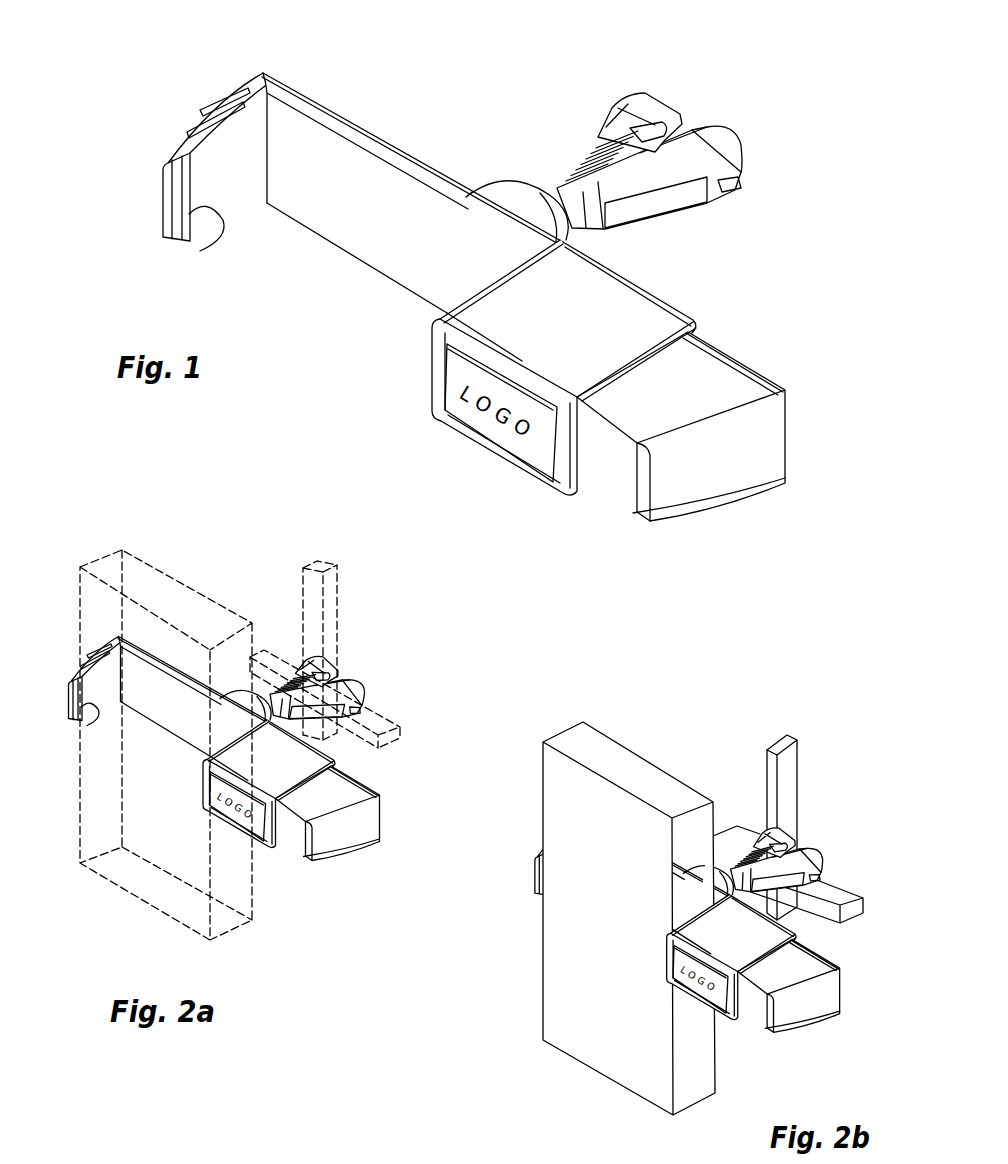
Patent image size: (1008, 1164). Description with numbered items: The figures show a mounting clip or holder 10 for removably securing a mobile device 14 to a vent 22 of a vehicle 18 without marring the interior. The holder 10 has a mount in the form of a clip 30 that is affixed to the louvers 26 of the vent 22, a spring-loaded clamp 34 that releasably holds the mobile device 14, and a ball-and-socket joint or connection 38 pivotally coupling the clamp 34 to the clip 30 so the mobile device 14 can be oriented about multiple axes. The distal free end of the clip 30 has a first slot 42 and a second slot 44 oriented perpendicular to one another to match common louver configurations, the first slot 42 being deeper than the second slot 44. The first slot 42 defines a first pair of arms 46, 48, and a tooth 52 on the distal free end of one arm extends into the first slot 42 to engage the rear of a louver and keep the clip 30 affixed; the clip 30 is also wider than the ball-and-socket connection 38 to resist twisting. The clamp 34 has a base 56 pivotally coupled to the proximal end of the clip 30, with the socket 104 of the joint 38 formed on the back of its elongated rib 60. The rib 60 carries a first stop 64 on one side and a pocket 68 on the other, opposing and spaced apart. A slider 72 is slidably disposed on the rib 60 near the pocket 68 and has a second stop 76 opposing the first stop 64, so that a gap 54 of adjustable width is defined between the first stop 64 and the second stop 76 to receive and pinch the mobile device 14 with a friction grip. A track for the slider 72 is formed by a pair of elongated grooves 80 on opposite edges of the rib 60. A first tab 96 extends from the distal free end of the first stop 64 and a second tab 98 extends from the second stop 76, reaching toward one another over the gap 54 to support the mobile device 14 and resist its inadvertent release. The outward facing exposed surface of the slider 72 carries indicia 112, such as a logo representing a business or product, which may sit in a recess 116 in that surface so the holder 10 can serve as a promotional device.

In FIG. 1, the mounting clip or holder 10 is at (480, 299).
In FIG. 2a, the mounting clip or holder 10 is at (323, 805).
In FIG. 2b, the mounting clip or holder 10 is at (699, 926).
In FIG. 2a, the mobile device 14 is at (150, 883).
In FIG. 2b, the mobile device 14 is at (595, 1050).
In FIG. 2a, the vehicle 18 is at (349, 650).
In FIG. 2b, the vehicle 18 is at (815, 827).
In FIG. 2a, the vent 22 is at (337, 578).
In FIG. 2b, the vent 22 is at (798, 776).
In FIG. 2a, the louvers 26 is at (380, 718).
In FIG. 2b, the louvers 26 is at (833, 893).
In FIG. 1, the clip 30 is at (677, 145).
In FIG. 1, the clamp 34 is at (576, 415).
In FIG. 1, the ball-and-socket joint or connection 38 is at (530, 188).
In FIG. 1, the first slot 42 is at (660, 204).
In FIG. 1, the second slot 44 is at (657, 147).
In FIG. 1, the first arm 46 is at (718, 144).
In FIG. 1, the second arm 48 is at (703, 205).
In FIG. 1, the tooth 52 is at (714, 188).
In FIG. 1, the gap 54 is at (285, 275).
In FIG. 1, the base 56 is at (393, 149).
In FIG. 1, the rib 60 is at (315, 97).
In FIG. 1, the first stop 64 is at (233, 91).
In FIG. 1, the pocket 68 is at (697, 390).
In FIG. 1, the slider 72 is at (500, 458).
In FIG. 1, the second stop 76 is at (477, 287).
In FIG. 1, the elongated grooves 80 is at (713, 350).
In FIG. 1, the first tab 96 is at (220, 222).
In FIG. 1, the second tab 98 is at (423, 305).
In FIG. 1, the socket 104 is at (490, 191).
In FIG. 1, the indicia 112 is at (480, 408).
In FIG. 1, the recess 116 is at (540, 474).